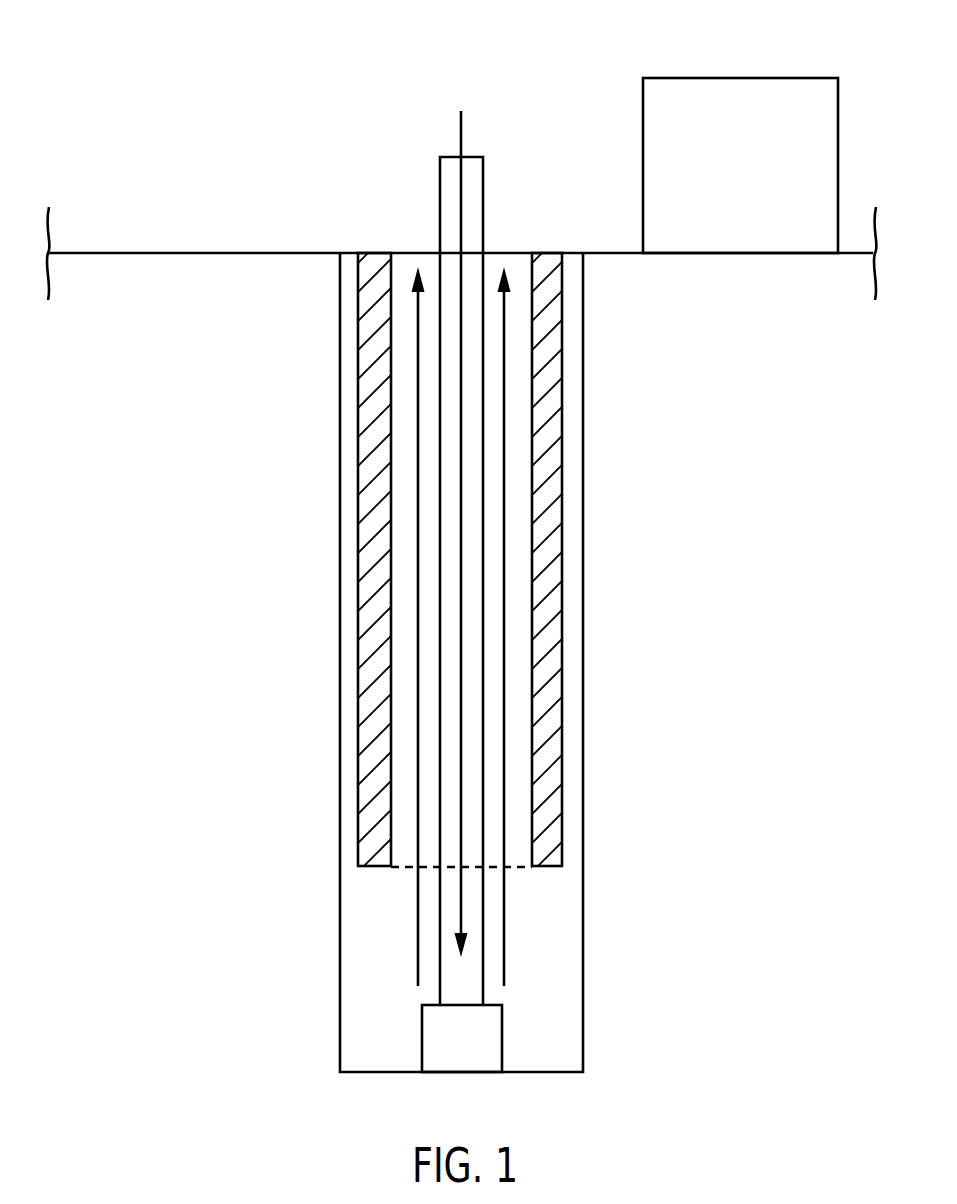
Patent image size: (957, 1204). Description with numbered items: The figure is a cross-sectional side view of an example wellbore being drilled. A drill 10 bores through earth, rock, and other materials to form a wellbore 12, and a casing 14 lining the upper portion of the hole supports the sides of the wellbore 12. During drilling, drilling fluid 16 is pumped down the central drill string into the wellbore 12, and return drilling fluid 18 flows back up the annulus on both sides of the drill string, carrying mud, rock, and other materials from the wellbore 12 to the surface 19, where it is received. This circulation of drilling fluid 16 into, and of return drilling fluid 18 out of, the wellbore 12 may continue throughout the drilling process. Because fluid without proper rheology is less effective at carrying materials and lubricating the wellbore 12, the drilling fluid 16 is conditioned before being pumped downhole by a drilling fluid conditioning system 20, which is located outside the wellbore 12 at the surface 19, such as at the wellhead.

The drill 10 is at (495, 1038).
The wellbore 12 is at (577, 1005).
The casing 14 is at (367, 768).
The drilling fluid 16 is at (463, 903).
The return drilling fluid 18 is at (417, 912).
The surface 19 is at (175, 253).
The system for conditioning the drilling fluid 20 is at (742, 78).